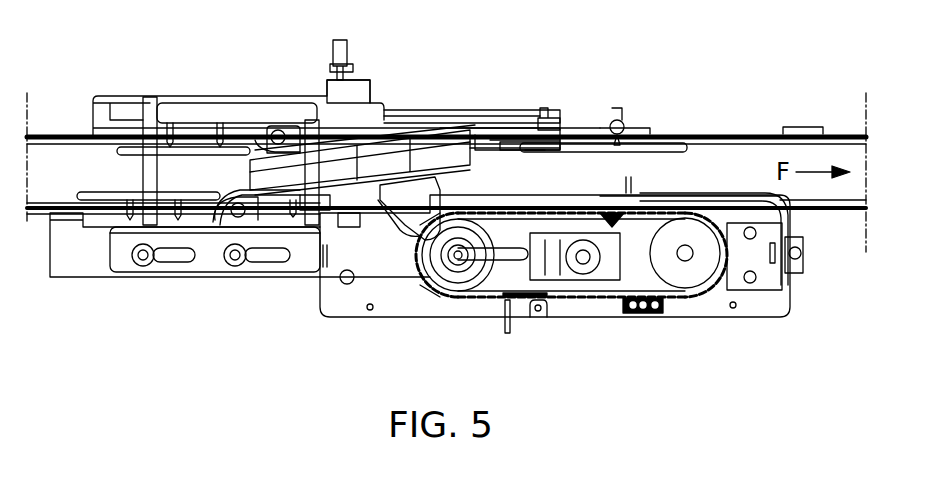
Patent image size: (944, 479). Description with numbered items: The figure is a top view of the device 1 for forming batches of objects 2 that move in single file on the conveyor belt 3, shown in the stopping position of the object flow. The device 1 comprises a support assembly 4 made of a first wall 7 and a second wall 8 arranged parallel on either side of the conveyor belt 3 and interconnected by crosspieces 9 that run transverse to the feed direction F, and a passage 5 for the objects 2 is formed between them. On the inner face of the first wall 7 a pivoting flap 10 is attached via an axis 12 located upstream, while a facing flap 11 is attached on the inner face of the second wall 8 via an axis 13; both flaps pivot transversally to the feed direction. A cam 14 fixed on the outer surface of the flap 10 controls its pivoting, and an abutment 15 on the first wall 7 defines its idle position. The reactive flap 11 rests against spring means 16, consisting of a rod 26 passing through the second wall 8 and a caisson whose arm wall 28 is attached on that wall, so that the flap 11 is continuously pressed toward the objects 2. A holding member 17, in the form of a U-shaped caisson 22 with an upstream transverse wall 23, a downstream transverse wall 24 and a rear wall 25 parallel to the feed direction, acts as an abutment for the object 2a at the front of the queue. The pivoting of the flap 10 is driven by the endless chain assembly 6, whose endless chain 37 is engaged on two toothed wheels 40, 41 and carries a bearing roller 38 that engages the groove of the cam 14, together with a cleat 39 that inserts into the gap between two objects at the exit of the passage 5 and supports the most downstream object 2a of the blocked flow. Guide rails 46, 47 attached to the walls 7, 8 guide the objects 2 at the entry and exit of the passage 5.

The device 1 is at (560, 90).
The objects 2 is at (390, 150).
The object at the front of the queue 2a is at (440, 157).
The conveyor belt 3 is at (815, 157).
The support assembly 4 is at (233, 97).
The passage 5 is at (258, 210).
The endless chain assembly 6 is at (476, 325).
The first wall 7 is at (130, 235).
The second wall 8 is at (172, 109).
The crosspieces 9 is at (150, 157).
The pivoting flap 10 is at (338, 155).
The flap 11 is at (425, 135).
The axis 12 is at (218, 228).
The axis 13 is at (274, 118).
The cam 14 is at (392, 230).
The abutment 15 is at (350, 222).
The spring means 16 is at (372, 78).
The holding member 17 is at (488, 135).
The caisson 22 is at (526, 154).
The upstream transverse wall 23 is at (460, 128).
The downstream transverse wall 24 is at (530, 148).
The rear wall 25 is at (503, 163).
The rod 26 is at (339, 66).
The wall 28 is at (339, 86).
The endless chain 37 is at (702, 290).
The bearing roller 38 is at (535, 312).
The cleat 39 is at (506, 330).
The toothed wheel 40 is at (457, 278).
The toothed wheel 41 is at (703, 267).
The guide rail 46 is at (207, 150).
The guide rail 47 is at (665, 147).